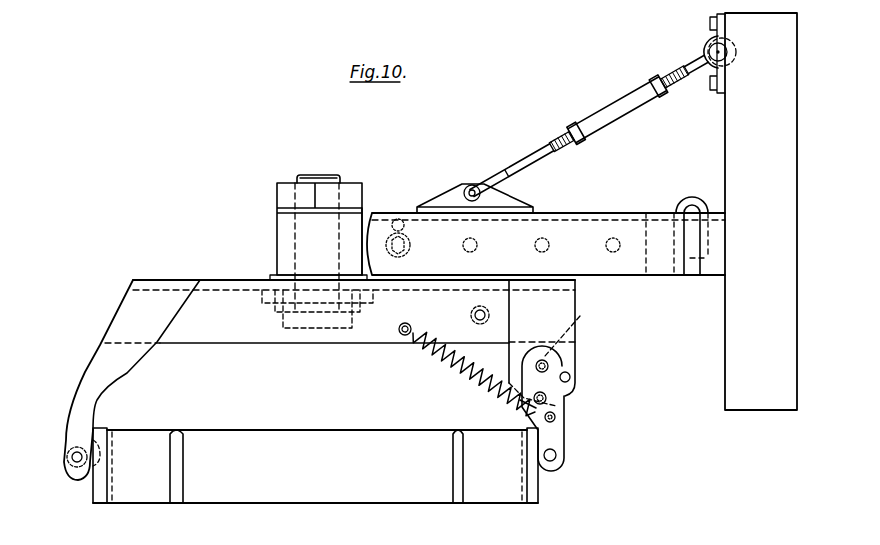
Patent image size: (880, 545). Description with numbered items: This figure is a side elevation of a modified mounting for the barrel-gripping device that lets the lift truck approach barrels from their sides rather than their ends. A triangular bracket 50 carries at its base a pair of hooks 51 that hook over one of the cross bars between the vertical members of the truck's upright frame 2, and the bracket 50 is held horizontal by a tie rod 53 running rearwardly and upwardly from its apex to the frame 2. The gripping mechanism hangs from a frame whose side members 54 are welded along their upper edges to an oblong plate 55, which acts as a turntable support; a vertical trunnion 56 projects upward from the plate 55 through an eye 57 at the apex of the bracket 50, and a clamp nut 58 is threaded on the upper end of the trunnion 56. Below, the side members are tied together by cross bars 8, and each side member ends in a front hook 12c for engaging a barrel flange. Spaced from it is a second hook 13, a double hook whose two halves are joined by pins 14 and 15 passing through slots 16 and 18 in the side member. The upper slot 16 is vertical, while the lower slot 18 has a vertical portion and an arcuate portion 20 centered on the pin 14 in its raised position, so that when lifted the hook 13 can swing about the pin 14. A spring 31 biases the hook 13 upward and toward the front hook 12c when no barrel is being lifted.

The upright frame 2 is at (725, 382).
The cross bars 8 is at (68, 480).
The hook 12c is at (84, 370).
The second hook 13 is at (565, 436).
The pin 14 is at (548, 366).
The pin 15 is at (547, 398).
The upper slot 16 is at (574, 331).
The slot 18 is at (520, 400).
The arcuate portion 20 is at (570, 378).
The spring 31 is at (463, 371).
The triangular bracket 50 is at (598, 226).
The hooks 51 is at (690, 201).
The tie rod 53 is at (594, 116).
The side members 54 is at (217, 343).
The oblong plate 55 is at (238, 278).
The vertical trunnion 56 is at (329, 175).
The eye 57 is at (352, 228).
The clamp nut 58 is at (358, 186).